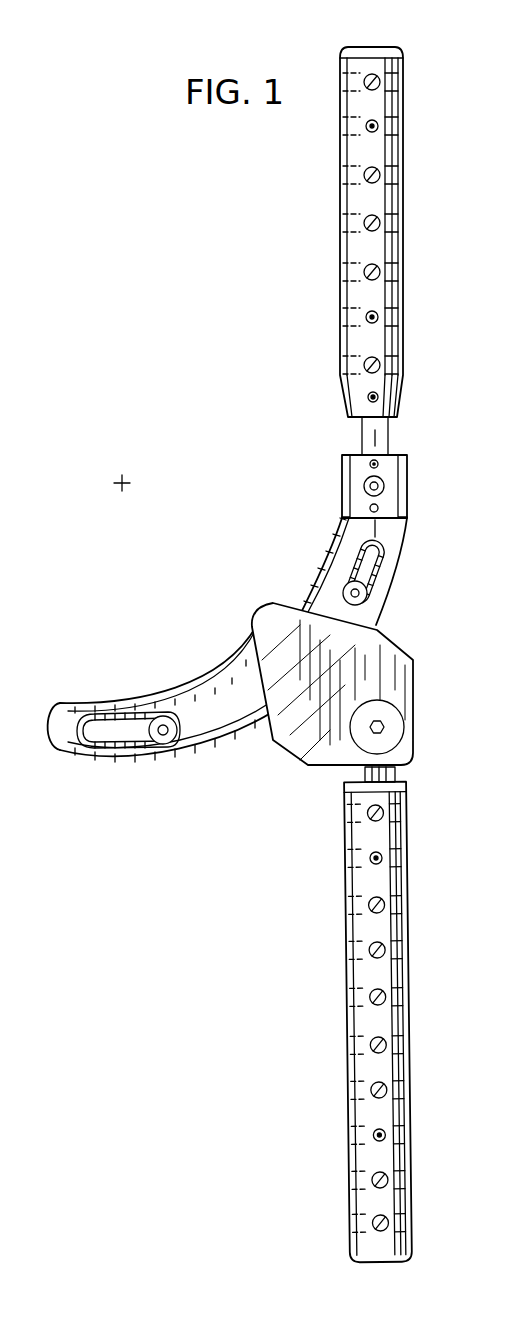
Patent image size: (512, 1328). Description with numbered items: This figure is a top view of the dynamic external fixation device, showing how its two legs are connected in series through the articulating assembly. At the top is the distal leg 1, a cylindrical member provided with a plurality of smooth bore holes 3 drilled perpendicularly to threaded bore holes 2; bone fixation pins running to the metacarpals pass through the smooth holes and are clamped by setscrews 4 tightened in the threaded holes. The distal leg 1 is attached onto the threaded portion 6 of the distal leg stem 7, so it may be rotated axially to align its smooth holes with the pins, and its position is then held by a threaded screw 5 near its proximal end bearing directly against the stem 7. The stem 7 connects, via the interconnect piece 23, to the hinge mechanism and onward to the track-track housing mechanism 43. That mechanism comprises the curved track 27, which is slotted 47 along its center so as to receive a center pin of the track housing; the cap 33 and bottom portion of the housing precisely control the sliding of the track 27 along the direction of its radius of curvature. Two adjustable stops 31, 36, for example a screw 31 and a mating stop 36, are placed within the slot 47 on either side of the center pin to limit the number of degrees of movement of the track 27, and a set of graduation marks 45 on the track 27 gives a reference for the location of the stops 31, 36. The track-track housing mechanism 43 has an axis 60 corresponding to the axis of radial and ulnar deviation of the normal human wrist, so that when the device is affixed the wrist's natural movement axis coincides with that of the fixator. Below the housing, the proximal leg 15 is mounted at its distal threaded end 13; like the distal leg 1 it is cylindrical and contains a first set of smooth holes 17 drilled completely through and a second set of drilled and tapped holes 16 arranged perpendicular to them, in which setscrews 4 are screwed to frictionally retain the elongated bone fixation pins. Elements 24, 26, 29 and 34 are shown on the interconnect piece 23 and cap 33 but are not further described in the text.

The distal leg 1 is at (410, 98).
The threaded bore holes 2 is at (374, 119).
The smooth bore holes 3 is at (348, 73).
The setscrews 4 is at (380, 126).
The threaded screw 5 is at (379, 397).
The threaded portion 6 is at (376, 420).
The distal leg stem 7 is at (382, 437).
The distal threaded end 13 is at (397, 773).
The proximal leg 15 is at (425, 1205).
The threaded holes 16 is at (386, 813).
The smooth holes 17 is at (343, 810).
The interconnect piece 23 is at (342, 485).
The bore 24 is at (379, 465).
The bore 26 is at (378, 511).
The curved track 27 is at (63, 720).
The bearing bore 29 is at (384, 487).
The adjustable stop (screw) 31 is at (367, 595).
The cap 33 is at (380, 677).
The pivot screw 34 is at (390, 723).
The adjustable stop 36 is at (163, 744).
The track-track housing mechanism 43 is at (226, 610).
The graduation marks 45 is at (338, 552).
The slot 47 is at (362, 562).
The axis 60 is at (118, 475).